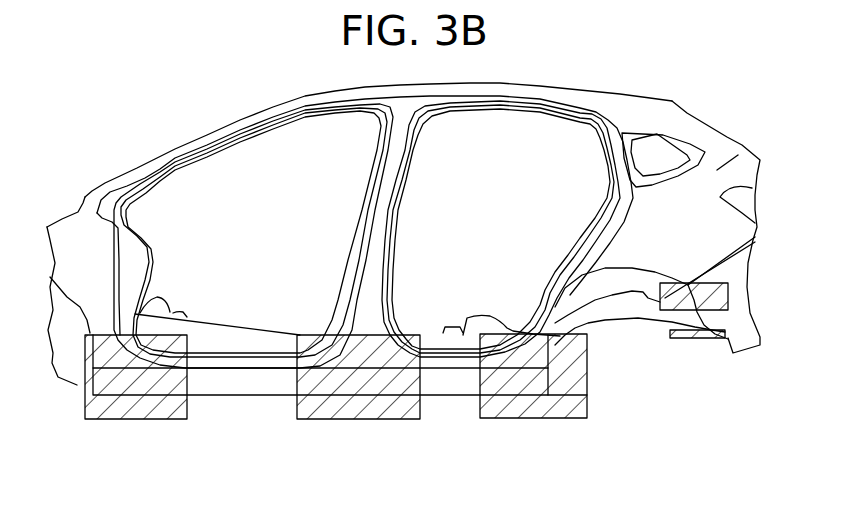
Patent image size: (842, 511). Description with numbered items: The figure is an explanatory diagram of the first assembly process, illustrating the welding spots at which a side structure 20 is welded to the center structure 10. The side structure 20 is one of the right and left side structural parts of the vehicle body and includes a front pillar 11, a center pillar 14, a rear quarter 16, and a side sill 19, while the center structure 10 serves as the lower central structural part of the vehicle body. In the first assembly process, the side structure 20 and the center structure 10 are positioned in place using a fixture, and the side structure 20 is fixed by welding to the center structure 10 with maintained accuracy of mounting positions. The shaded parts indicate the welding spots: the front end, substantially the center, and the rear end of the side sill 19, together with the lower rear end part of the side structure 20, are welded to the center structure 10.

The center structure 10 is at (217, 336).
The front pillar 11 is at (190, 148).
The center pillar 14 is at (390, 213).
The rear quarter 16 is at (597, 158).
The side sill 19 is at (237, 383).
The side structure 20 is at (742, 145).